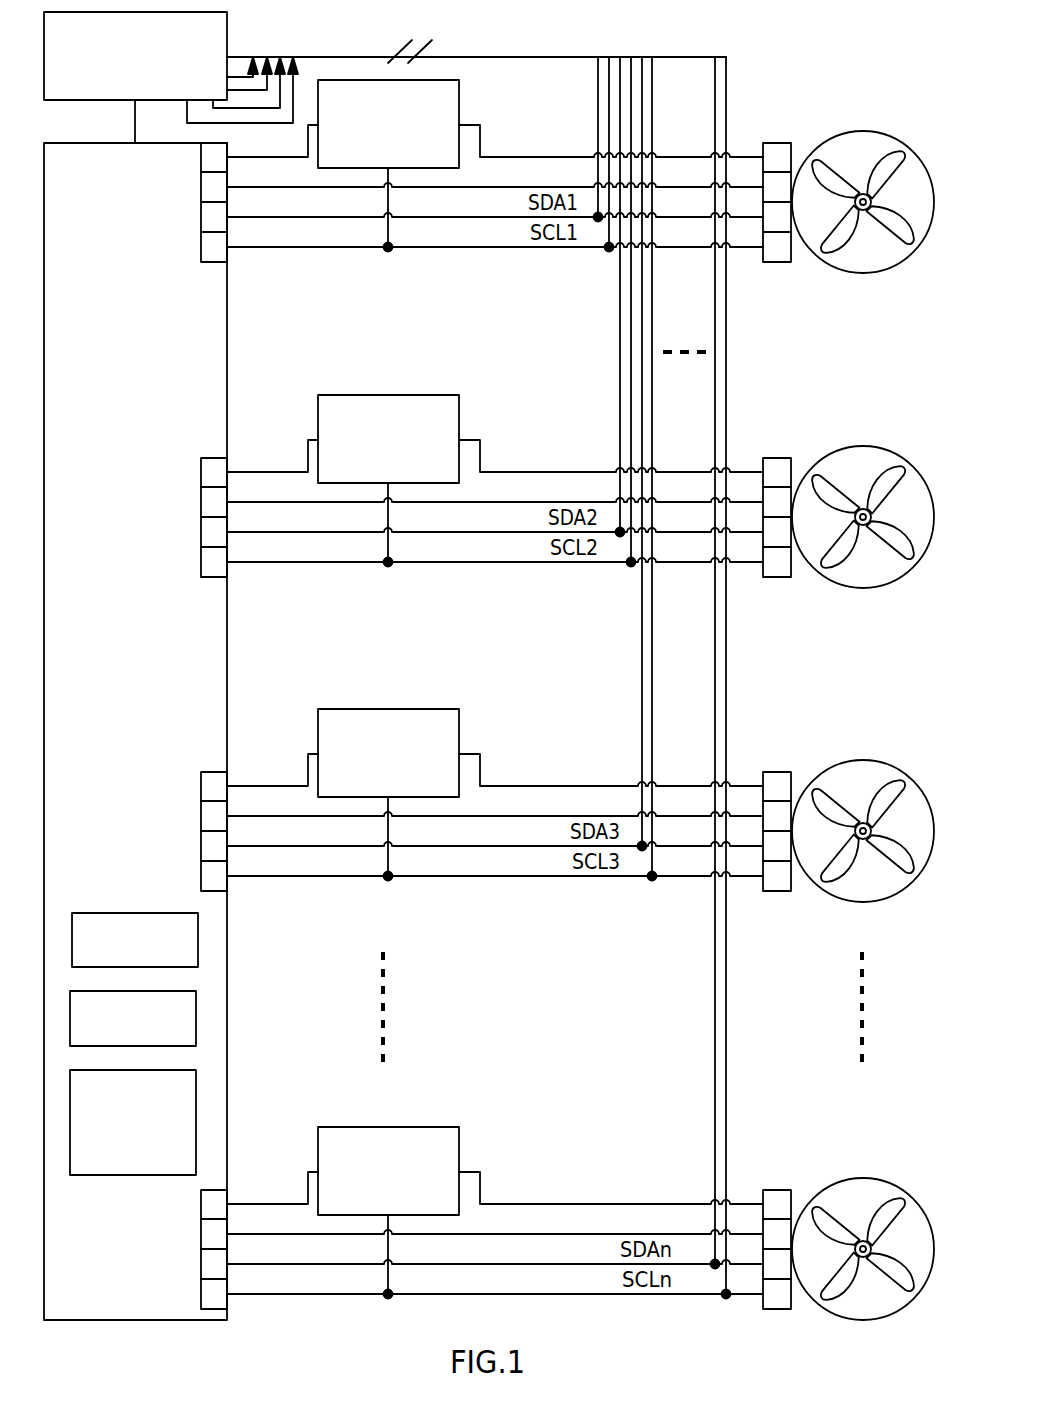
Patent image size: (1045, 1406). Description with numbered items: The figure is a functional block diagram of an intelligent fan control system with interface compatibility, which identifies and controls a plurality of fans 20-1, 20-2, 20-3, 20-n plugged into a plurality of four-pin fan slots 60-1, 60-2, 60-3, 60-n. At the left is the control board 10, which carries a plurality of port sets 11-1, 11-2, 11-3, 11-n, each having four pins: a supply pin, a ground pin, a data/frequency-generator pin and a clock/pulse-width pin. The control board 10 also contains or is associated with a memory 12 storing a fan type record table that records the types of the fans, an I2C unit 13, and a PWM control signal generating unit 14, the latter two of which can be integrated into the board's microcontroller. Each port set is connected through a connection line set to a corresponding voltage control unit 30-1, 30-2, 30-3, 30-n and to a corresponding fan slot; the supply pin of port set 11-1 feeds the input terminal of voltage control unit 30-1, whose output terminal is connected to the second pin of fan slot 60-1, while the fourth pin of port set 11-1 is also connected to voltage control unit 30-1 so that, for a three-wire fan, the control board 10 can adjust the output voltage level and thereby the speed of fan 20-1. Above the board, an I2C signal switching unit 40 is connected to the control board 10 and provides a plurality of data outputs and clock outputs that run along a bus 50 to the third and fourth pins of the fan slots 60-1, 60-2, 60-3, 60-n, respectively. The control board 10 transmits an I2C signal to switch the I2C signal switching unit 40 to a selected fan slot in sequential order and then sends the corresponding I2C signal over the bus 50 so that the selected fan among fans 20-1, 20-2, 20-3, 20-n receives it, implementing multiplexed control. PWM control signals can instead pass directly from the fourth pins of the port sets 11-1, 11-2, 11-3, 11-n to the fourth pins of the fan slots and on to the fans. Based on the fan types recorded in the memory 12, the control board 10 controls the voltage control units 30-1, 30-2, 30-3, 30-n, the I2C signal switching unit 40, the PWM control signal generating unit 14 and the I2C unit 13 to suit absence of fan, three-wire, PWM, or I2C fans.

The control board 10 is at (222, 665).
The port set 11-1 is at (222, 255).
The port set 11-2 is at (213, 462).
The port set 11-3 is at (213, 773).
The port set 11-n is at (213, 1193).
The memory 12 is at (200, 938).
The I2C unit 13 is at (197, 1016).
The PWM control signal generating unit 14 is at (188, 1122).
The fan 20-1 is at (855, 143).
The fan 20-2 is at (857, 462).
The fan 20-3 is at (857, 776).
The fan 20-n is at (857, 1194).
The voltage control unit 30-1 is at (453, 110).
The voltage control unit 30-2 is at (453, 413).
The voltage control unit 30-3 is at (453, 727).
The voltage control unit 30-n is at (453, 1145).
The I2C signal switching unit 40 is at (222, 46).
The bus 50 is at (477, 57).
The fan slot 60-1 is at (777, 153).
The fan slot 60-2 is at (775, 465).
The fan slot 60-3 is at (775, 779).
The fan slot 60-n is at (775, 1197).